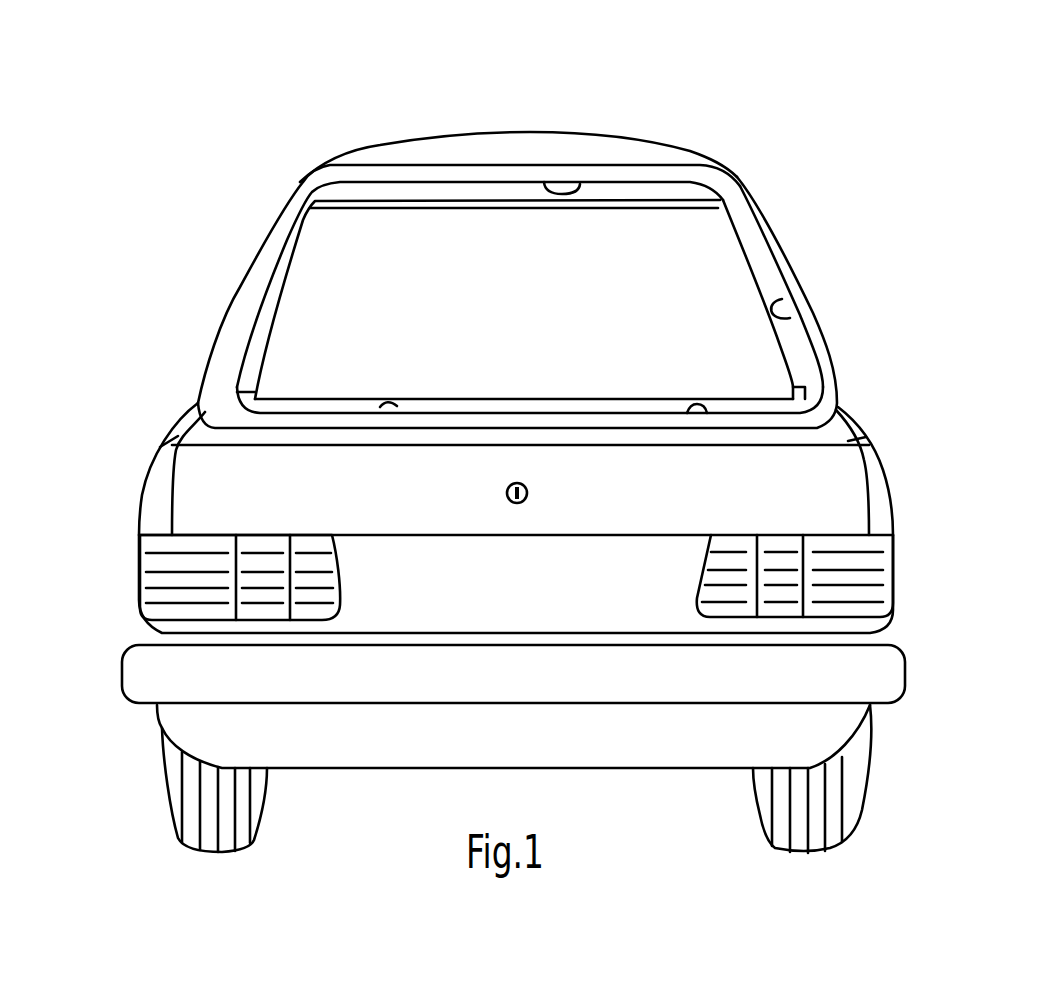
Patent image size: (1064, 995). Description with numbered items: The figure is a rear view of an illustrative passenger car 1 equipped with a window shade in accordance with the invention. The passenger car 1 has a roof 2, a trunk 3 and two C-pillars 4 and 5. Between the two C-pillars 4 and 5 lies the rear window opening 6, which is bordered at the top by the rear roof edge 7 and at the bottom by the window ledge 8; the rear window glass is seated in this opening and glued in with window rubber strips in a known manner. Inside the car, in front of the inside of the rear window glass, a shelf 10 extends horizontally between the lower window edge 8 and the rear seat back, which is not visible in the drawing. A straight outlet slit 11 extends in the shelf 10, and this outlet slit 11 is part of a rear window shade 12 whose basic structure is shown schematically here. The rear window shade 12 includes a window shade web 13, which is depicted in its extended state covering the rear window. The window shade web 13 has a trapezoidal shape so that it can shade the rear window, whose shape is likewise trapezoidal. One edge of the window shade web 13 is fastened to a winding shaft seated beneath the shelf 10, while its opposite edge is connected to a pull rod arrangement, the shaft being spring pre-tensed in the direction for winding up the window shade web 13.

The passenger car 1 is at (802, 186).
The roof 2 is at (493, 133).
The trunk 3 is at (940, 472).
The C-pillar 4 is at (253, 292).
The C-pillar 5 is at (778, 277).
The rear window opening 6 is at (793, 318).
The rear roof edge 7 is at (580, 186).
The window ledge 8 is at (707, 413).
The shelf 10 is at (392, 408).
The outlet slit 11 is at (805, 388).
The rear window shade 12 is at (172, 292).
The window shade web 13 is at (543, 339).